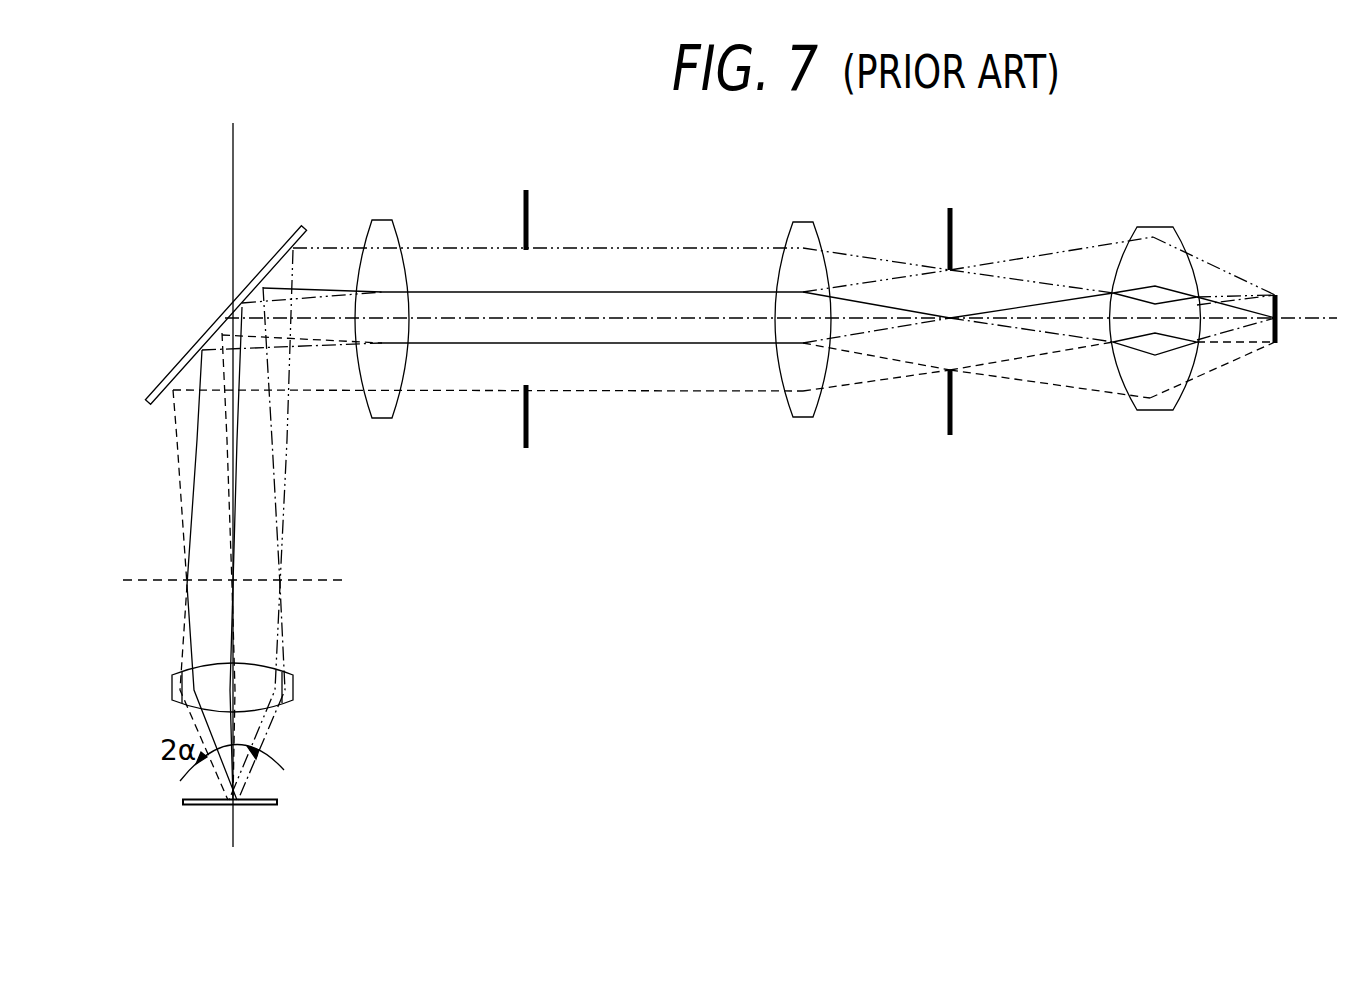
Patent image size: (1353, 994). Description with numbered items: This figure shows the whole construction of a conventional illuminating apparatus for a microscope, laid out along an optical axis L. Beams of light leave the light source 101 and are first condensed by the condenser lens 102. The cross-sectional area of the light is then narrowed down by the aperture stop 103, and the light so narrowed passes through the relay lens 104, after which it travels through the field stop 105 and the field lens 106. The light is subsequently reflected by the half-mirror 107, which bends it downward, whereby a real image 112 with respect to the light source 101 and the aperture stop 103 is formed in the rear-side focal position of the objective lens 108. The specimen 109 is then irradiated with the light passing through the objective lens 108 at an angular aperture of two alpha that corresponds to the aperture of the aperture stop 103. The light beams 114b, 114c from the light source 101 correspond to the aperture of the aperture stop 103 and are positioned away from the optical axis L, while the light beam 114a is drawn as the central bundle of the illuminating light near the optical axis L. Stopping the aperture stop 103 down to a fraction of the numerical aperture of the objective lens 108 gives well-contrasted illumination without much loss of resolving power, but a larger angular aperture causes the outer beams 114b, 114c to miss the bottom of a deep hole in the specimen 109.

The light source 101 is at (1276, 294).
The condenser lens 102 is at (1148, 228).
The aperture stop 103 is at (950, 208).
The relay lens 104 is at (801, 222).
The field stop 105 is at (527, 190).
The field lens 106 is at (384, 222).
The half-mirror 107 is at (168, 380).
The objective lens 108 is at (172, 683).
The specimen 109 is at (206, 806).
The real image 112 is at (128, 580).
The central light beam 114a is at (1027, 307).
The light beam 114b is at (1032, 283).
The light beam 114c is at (1083, 347).
The optical axis L is at (1327, 326).